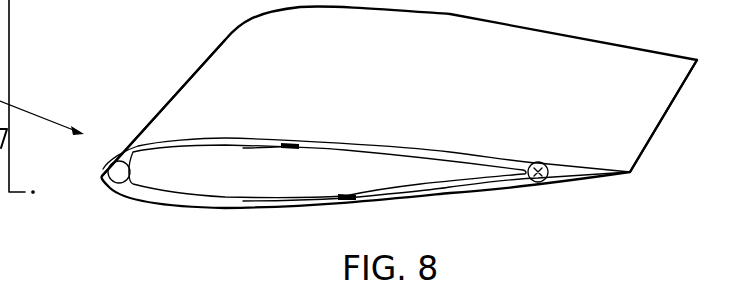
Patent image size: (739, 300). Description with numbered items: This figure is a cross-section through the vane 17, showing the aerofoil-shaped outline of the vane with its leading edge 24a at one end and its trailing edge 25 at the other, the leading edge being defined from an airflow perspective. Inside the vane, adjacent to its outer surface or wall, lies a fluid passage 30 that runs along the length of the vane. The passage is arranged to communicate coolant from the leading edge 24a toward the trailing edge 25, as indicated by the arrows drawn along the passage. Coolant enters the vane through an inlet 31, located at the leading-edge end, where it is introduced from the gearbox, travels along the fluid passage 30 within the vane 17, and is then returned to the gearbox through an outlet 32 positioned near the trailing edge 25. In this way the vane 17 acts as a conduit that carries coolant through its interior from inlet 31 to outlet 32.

The vane 17 is at (193, 80).
The leading edge 24a is at (150, 115).
The trailing edge 25 is at (650, 143).
The fluid passage 30 is at (243, 198).
The inlet 31 is at (122, 178).
The outlet 32 is at (538, 182).